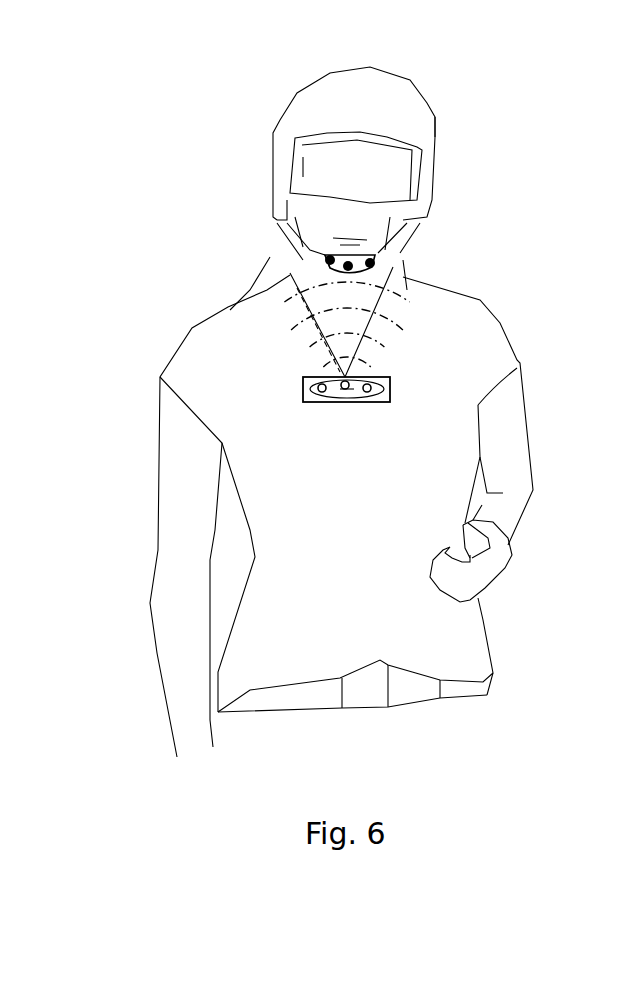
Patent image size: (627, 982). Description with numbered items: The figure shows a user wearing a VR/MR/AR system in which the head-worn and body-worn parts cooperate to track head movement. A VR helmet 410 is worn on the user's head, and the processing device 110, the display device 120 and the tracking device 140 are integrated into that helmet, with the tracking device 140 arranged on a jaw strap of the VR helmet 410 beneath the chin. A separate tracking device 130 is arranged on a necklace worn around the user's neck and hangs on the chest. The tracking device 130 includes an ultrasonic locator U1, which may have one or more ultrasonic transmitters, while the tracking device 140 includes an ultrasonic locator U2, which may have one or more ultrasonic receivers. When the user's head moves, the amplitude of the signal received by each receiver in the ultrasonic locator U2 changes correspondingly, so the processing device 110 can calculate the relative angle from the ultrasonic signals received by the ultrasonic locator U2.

The processing device 110 is at (317, 107).
The VR helmet 410 is at (437, 123).
The display device 120 is at (393, 173).
The tracking device 140 is at (377, 257).
The tracking device 130 is at (390, 392).
The ultrasonic locator U1 is at (357, 393).
The ultrasonic locator U2 is at (323, 255).